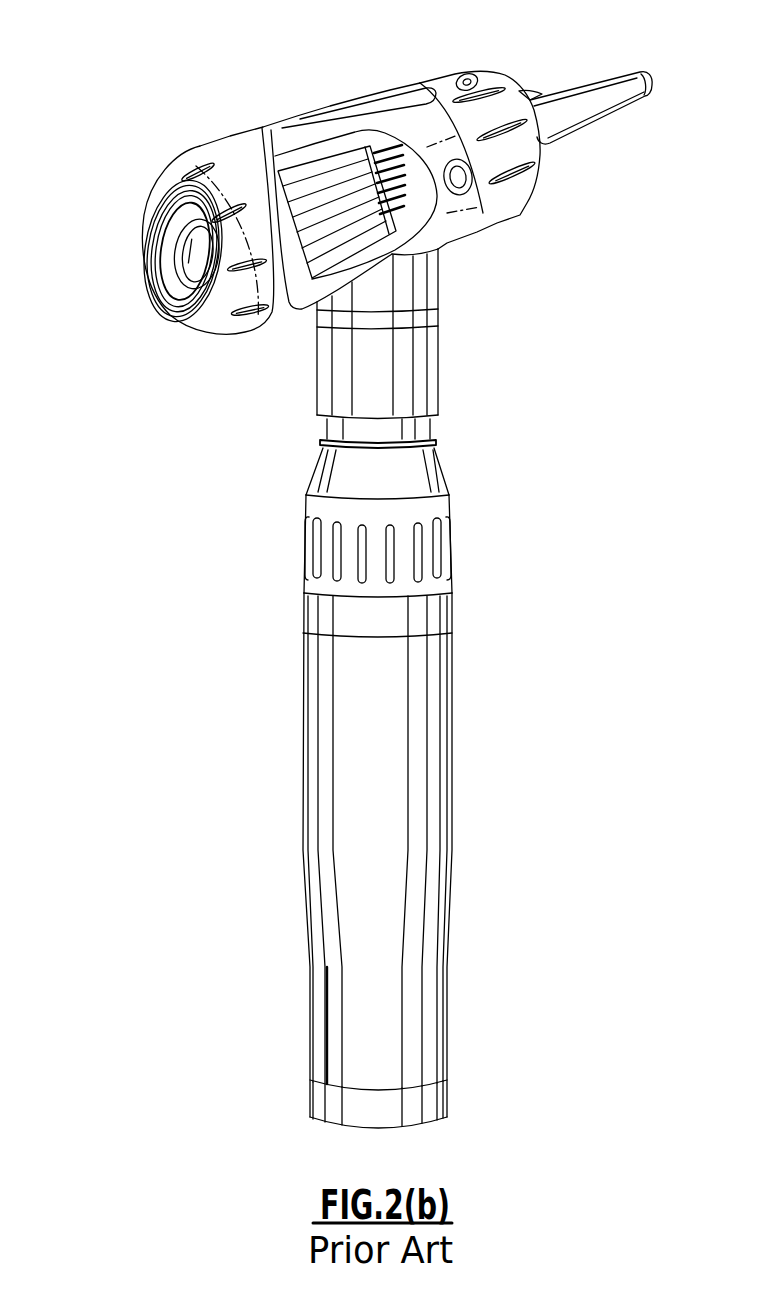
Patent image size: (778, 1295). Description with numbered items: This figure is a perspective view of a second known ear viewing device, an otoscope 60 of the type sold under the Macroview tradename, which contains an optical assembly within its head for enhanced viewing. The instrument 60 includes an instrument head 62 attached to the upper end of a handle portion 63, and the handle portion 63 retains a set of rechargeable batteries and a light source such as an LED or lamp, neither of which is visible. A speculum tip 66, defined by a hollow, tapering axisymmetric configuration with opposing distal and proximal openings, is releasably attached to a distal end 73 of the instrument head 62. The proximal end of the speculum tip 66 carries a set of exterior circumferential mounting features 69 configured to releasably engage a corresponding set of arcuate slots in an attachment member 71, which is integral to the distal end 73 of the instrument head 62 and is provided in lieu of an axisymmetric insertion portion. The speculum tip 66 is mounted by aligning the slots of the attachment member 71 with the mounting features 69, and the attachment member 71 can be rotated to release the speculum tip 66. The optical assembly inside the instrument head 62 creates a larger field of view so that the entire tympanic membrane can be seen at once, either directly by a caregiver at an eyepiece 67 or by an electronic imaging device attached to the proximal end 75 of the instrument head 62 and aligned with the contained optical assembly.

The otoscope 60 is at (93, 25).
The instrument head 62 is at (283, 130).
The handle portion 63 is at (303, 768).
The speculum tip 66 is at (597, 118).
The eyepiece 67 is at (192, 308).
The exterior circumferential mounting features 69 is at (530, 97).
The attachment member 71 is at (522, 205).
The distal end 73 is at (416, 83).
The proximal end 75 is at (207, 146).